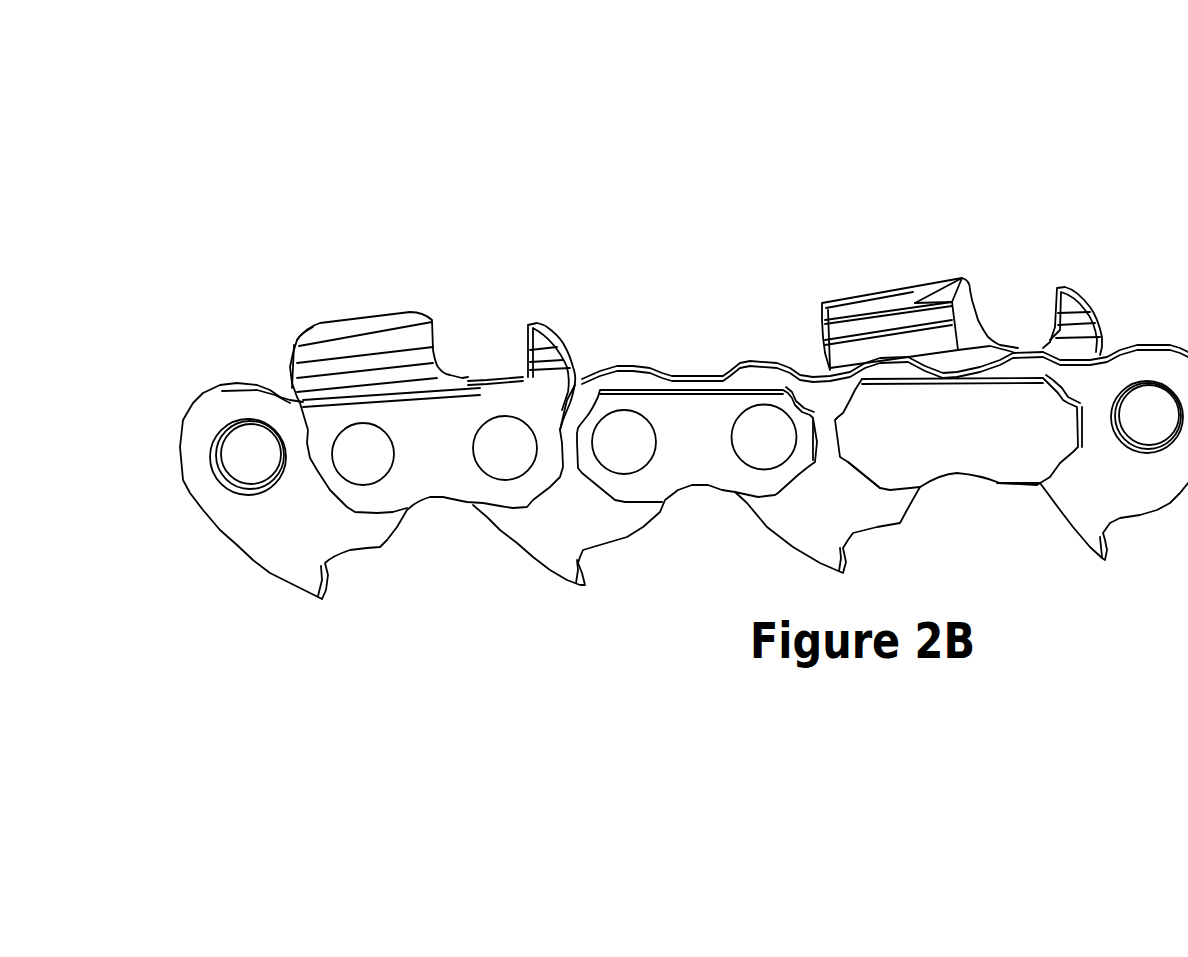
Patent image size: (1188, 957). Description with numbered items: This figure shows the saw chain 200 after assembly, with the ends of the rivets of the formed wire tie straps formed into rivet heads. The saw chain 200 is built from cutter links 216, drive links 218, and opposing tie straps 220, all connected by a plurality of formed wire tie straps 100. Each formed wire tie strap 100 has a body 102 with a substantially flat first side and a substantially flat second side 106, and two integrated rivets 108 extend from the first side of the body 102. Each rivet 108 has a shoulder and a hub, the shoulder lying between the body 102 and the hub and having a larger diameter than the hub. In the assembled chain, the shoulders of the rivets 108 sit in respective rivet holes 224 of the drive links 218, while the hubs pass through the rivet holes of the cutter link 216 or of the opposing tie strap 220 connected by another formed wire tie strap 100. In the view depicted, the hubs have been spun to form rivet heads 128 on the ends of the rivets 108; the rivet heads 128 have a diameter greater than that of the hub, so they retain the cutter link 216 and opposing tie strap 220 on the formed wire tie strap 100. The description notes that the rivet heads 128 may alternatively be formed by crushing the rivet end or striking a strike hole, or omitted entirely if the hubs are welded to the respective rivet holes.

The saw chain 200 is at (310, 165).
The cutter link 216 is at (448, 427).
The integrated rivets 108 is at (357, 447).
The rivet heads 128 is at (510, 470).
The opposing tie strap 220 is at (678, 405).
The second side 106 is at (872, 408).
The body 102 is at (992, 418).
The formed wire tie strap 100 is at (970, 493).
The rivet holes 224 is at (243, 465).
The drive link 218 is at (290, 542).